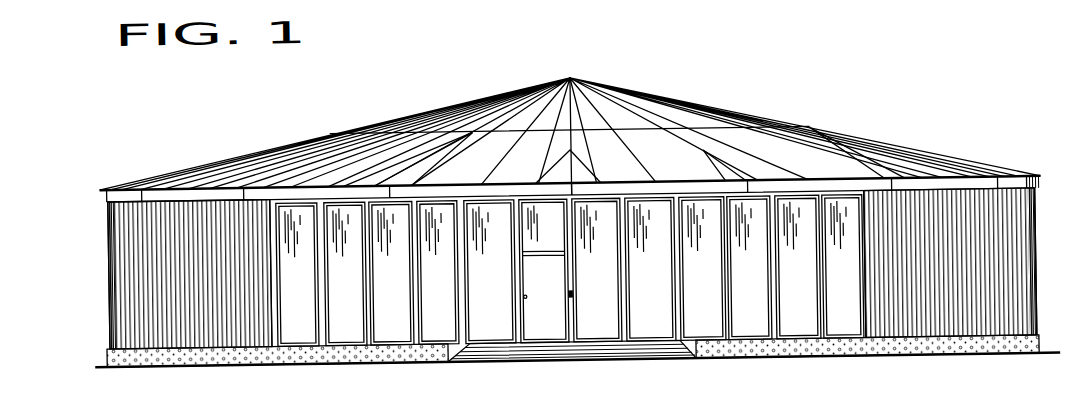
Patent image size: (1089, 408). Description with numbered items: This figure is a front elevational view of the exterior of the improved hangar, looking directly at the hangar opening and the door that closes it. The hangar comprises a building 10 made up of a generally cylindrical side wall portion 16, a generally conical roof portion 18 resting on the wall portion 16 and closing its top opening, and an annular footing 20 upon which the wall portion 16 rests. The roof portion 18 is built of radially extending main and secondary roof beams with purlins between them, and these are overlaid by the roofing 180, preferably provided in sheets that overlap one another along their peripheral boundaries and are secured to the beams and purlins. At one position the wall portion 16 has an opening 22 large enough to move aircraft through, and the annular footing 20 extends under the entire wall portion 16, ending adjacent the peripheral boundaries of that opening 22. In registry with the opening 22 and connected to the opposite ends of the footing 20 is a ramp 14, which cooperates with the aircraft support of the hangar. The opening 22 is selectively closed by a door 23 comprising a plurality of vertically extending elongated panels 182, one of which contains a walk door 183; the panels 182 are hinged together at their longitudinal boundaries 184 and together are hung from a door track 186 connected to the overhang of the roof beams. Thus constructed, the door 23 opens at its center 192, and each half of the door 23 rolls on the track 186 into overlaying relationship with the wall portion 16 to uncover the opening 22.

The building 10 is at (750, 100).
The ramp 14 is at (462, 359).
The side wall portion 16 is at (108, 283).
The roof portion 18 is at (293, 139).
The annular footing 20 is at (122, 358).
The opening 22 is at (280, 296).
The door 23 is at (721, 347).
The roofing 180 is at (615, 116).
The elongated panels 182 is at (350, 279).
The walk door 183 is at (532, 279).
The longitudinal boundaries 184 is at (675, 264).
The door track 186 is at (978, 189).
The center 192 is at (571, 294).